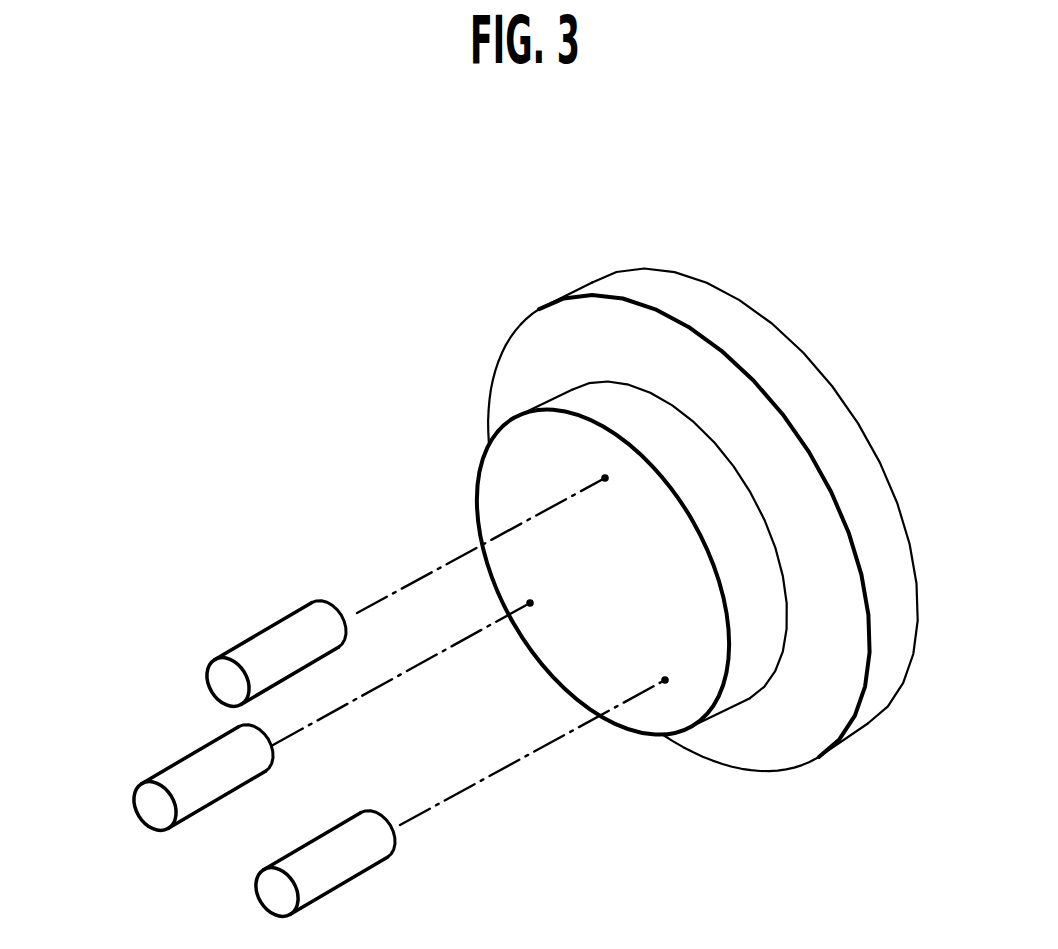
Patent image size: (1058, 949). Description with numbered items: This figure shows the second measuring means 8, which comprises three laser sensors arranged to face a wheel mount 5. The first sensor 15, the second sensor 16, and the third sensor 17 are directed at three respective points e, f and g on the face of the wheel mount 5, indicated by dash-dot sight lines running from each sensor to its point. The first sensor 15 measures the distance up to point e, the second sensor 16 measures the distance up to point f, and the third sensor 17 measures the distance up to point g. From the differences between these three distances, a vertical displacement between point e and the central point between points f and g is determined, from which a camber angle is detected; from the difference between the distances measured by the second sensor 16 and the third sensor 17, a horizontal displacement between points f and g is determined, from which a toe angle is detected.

The wheel mount 5 is at (715, 383).
The second measuring means 8 is at (152, 534).
The first sensor 15 is at (292, 637).
The second sensor 16 is at (187, 768).
The third sensor 17 is at (338, 862).